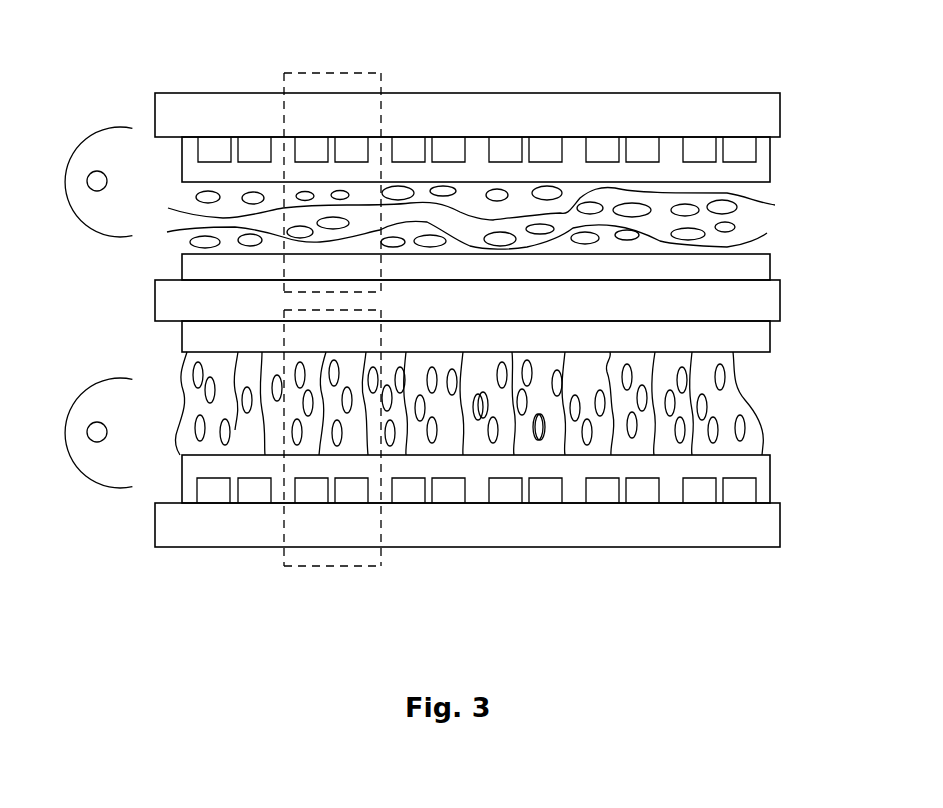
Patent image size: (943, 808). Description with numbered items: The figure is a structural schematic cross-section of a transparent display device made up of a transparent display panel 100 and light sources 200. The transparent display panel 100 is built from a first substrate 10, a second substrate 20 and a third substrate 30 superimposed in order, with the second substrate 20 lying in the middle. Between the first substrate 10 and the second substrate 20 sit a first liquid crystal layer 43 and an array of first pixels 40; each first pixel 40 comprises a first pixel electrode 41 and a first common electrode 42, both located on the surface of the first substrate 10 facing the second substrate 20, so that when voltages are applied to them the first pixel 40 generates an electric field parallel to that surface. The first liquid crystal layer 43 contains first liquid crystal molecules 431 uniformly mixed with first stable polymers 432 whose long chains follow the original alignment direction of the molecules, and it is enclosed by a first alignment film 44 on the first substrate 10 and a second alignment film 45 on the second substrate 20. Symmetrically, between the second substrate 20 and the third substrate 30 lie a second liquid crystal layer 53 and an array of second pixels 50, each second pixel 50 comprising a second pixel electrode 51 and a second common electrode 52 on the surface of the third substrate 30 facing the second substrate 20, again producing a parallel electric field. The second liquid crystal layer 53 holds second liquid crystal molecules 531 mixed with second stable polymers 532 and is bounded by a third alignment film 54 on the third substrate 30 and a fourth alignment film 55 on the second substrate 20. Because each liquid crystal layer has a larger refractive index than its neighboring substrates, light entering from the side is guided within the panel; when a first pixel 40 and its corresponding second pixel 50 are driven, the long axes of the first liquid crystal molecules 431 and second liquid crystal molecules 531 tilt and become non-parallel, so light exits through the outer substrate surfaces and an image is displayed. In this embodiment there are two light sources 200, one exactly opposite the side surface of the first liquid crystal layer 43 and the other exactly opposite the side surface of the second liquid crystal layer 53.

The transparent display panel 100 is at (181, 90).
The light source 200 is at (80, 137).
The third substrate 30 is at (237, 117).
The third alignment film 54 is at (514, 112).
The second pixel electrode 51 is at (308, 152).
The second common electrode 52 is at (353, 152).
The second pixel 50 is at (290, 72).
The second liquid crystal layer 53 is at (471, 134).
The second liquid crystal molecules 531 is at (549, 193).
The second stable polymer 532 is at (660, 205).
The fourth alignment film 55 is at (715, 272).
The second substrate 20 is at (745, 310).
The second alignment film 45 is at (715, 338).
The first pixel 40 is at (292, 568).
The first liquid crystal layer 43 is at (469, 490).
The first liquid crystal molecules 431 is at (542, 436).
The first stable polymer 432 is at (638, 440).
The first alignment film 44 is at (514, 526).
The first pixel electrode 41 is at (305, 492).
The first common electrode 42 is at (350, 492).
The first substrate 10 is at (218, 518).